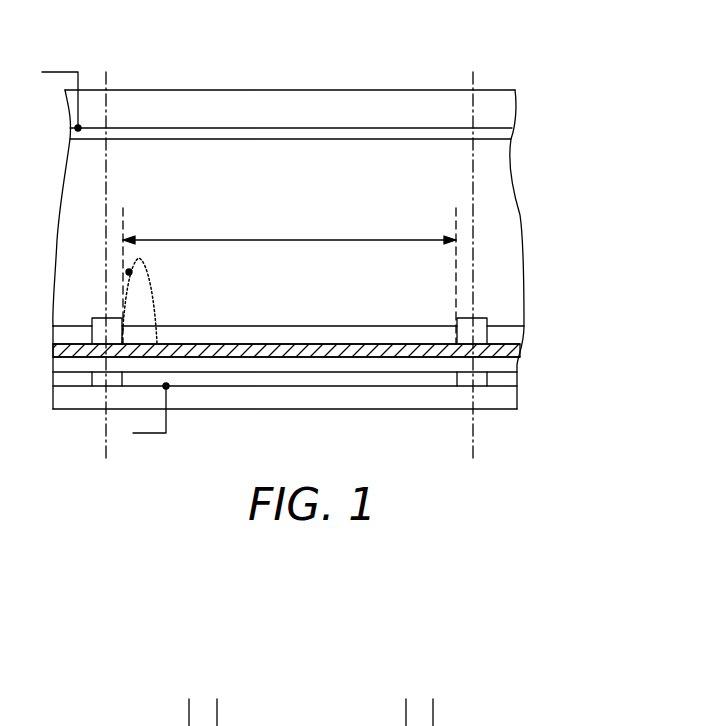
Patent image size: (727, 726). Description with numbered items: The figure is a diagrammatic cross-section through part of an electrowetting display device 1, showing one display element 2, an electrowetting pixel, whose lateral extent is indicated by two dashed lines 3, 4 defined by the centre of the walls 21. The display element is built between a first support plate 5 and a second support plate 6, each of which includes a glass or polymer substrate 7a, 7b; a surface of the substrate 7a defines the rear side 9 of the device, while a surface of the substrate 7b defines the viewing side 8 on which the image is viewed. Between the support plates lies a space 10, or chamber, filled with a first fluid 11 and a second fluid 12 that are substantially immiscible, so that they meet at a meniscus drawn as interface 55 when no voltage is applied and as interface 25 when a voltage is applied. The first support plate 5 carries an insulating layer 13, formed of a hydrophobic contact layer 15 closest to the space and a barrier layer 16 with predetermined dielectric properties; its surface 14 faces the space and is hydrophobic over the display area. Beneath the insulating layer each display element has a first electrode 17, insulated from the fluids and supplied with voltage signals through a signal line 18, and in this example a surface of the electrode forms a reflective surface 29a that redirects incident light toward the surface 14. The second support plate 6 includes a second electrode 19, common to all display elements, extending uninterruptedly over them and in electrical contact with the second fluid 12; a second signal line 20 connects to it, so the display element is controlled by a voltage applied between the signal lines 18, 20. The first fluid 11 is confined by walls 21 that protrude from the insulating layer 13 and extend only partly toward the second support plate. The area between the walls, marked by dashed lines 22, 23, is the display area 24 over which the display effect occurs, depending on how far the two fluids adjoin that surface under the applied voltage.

The electrowetting display device 1 is at (584, 63).
The display element 2 is at (287, 53).
The dashed line 3 is at (106, 74).
The dashed line 4 is at (473, 74).
The first support plate 5 is at (314, 379).
The second support plate 6 is at (311, 214).
The substrate 7a is at (499, 401).
The substrate 7b is at (422, 104).
The viewing side 8 is at (193, 90).
The rear side 9 is at (254, 410).
The space 10 is at (353, 153).
The first fluid 11 is at (423, 332).
The second fluid 12 is at (518, 213).
The insulating layer 13 is at (308, 372).
The surface 14 is at (331, 345).
The contact layer 15 is at (286, 352).
The barrier layer 16 is at (238, 357).
The first electrode 17 is at (348, 376).
The signal line 18 is at (152, 433).
The second electrode 19 is at (95, 133).
The second signal line 20 is at (57, 72).
The walls 21 is at (100, 330).
The dashed line 22 is at (456, 212).
The dashed line 23 is at (123, 212).
The display area 24 is at (289, 230).
The interface 25 is at (129, 272).
The reflective surface 29a is at (416, 372).
The interface 55 is at (379, 326).